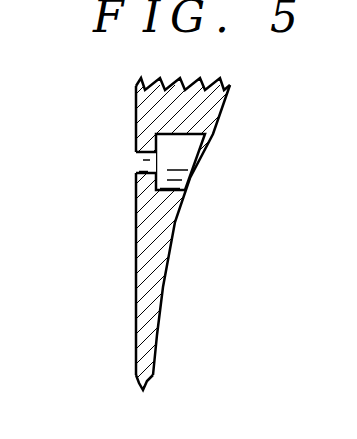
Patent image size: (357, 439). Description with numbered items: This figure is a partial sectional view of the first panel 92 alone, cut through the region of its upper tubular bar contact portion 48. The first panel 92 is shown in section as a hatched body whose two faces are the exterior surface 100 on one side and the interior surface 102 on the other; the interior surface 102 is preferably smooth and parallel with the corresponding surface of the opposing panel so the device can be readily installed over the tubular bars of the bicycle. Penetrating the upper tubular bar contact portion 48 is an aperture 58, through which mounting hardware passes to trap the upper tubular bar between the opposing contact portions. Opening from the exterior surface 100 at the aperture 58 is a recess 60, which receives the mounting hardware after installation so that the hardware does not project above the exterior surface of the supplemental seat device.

The upper tubular bar contact portion 48 is at (175, 222).
The aperture 58 is at (135, 160).
The recess 60 is at (185, 152).
The first panel 92 is at (156, 347).
The exterior surface 100 is at (163, 287).
The interior surface 102 is at (135, 255).